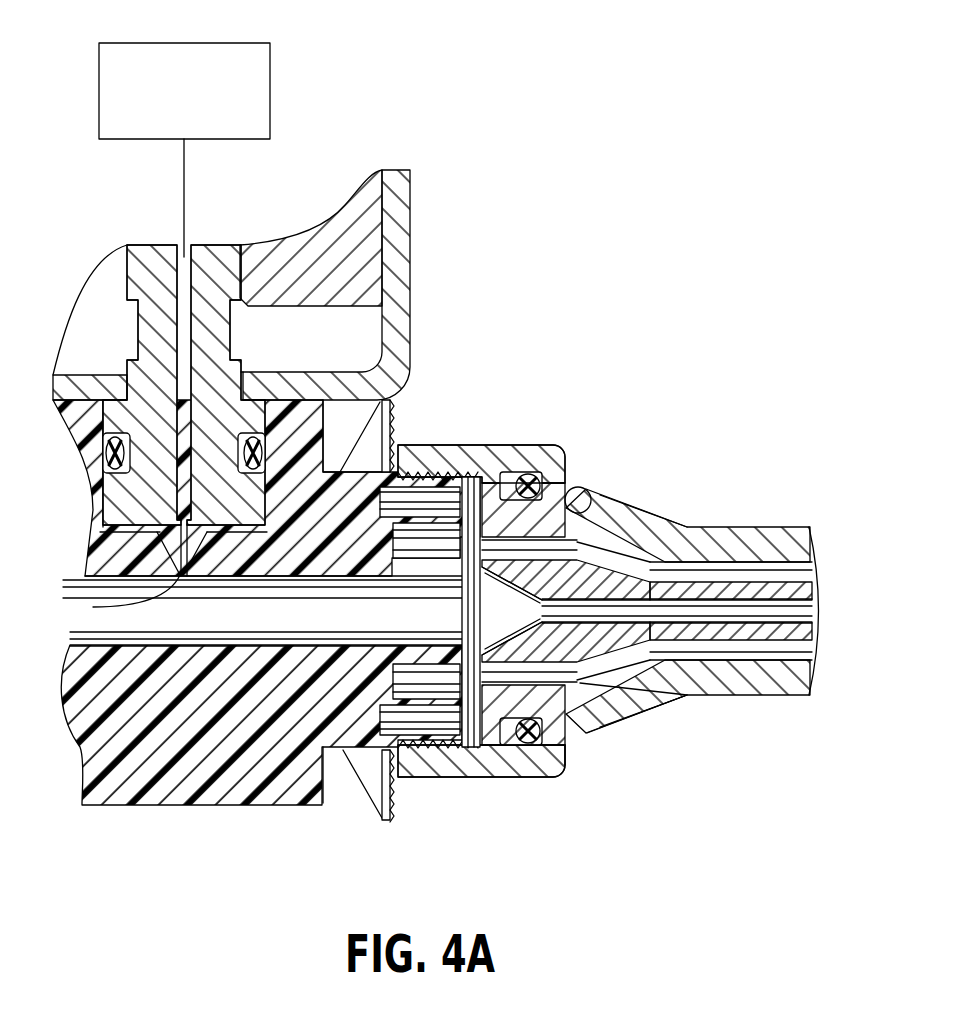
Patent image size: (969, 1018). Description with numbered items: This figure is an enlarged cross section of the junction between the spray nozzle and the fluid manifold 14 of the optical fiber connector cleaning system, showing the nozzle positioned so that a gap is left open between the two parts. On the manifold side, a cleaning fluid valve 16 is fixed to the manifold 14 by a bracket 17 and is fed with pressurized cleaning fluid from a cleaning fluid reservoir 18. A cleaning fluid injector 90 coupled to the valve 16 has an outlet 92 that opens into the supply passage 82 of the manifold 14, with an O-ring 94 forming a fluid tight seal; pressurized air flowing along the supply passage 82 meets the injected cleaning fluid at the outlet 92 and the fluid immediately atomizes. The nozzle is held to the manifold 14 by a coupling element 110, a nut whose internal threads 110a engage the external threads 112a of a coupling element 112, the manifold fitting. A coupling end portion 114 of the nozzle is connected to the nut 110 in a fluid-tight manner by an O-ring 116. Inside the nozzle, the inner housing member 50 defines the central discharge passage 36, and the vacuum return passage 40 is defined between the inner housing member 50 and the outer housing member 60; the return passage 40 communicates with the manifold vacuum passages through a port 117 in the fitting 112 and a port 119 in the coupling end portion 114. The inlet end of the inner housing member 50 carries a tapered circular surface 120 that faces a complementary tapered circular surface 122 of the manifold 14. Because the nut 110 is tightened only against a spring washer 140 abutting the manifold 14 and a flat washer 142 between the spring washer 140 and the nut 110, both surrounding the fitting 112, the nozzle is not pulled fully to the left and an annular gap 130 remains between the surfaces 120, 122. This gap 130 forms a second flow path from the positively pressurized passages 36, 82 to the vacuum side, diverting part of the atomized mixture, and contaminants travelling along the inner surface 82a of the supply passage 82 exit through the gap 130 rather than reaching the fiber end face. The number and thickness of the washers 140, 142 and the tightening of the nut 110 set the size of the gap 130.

The fluid manifold 14 is at (112, 806).
The cleaning fluid valve 16 is at (372, 217).
The bracket 17 is at (412, 257).
The cleaning fluid reservoir 18 is at (110, 43).
The discharge passage 36 is at (812, 608).
The vacuum return passage 40 is at (812, 657).
The inner housing member 50 is at (815, 632).
The outer housing member 60 is at (800, 530).
The supply passage 82 is at (95, 577).
The inner surface of the supply passage 82a is at (262, 643).
The cleaning fluid injector 90 is at (136, 340).
The outlet 92 is at (127, 607).
The O-ring 94 is at (108, 452).
The coupling element (nut) 110 is at (512, 445).
The internal threads 110a is at (414, 611).
The coupling element (manifold fitting) 112 is at (425, 790).
The external threads 112a is at (443, 543).
The coupling end portion 114 is at (585, 489).
The O-ring 116 is at (530, 480).
The port 117 is at (392, 600).
The port 119 is at (517, 673).
The tapered circular surface 120 is at (578, 553).
The tapered circular surface 122 is at (560, 770).
The gap 130 is at (630, 713).
The spring washer 140 is at (368, 778).
The flat washer 142 is at (390, 815).